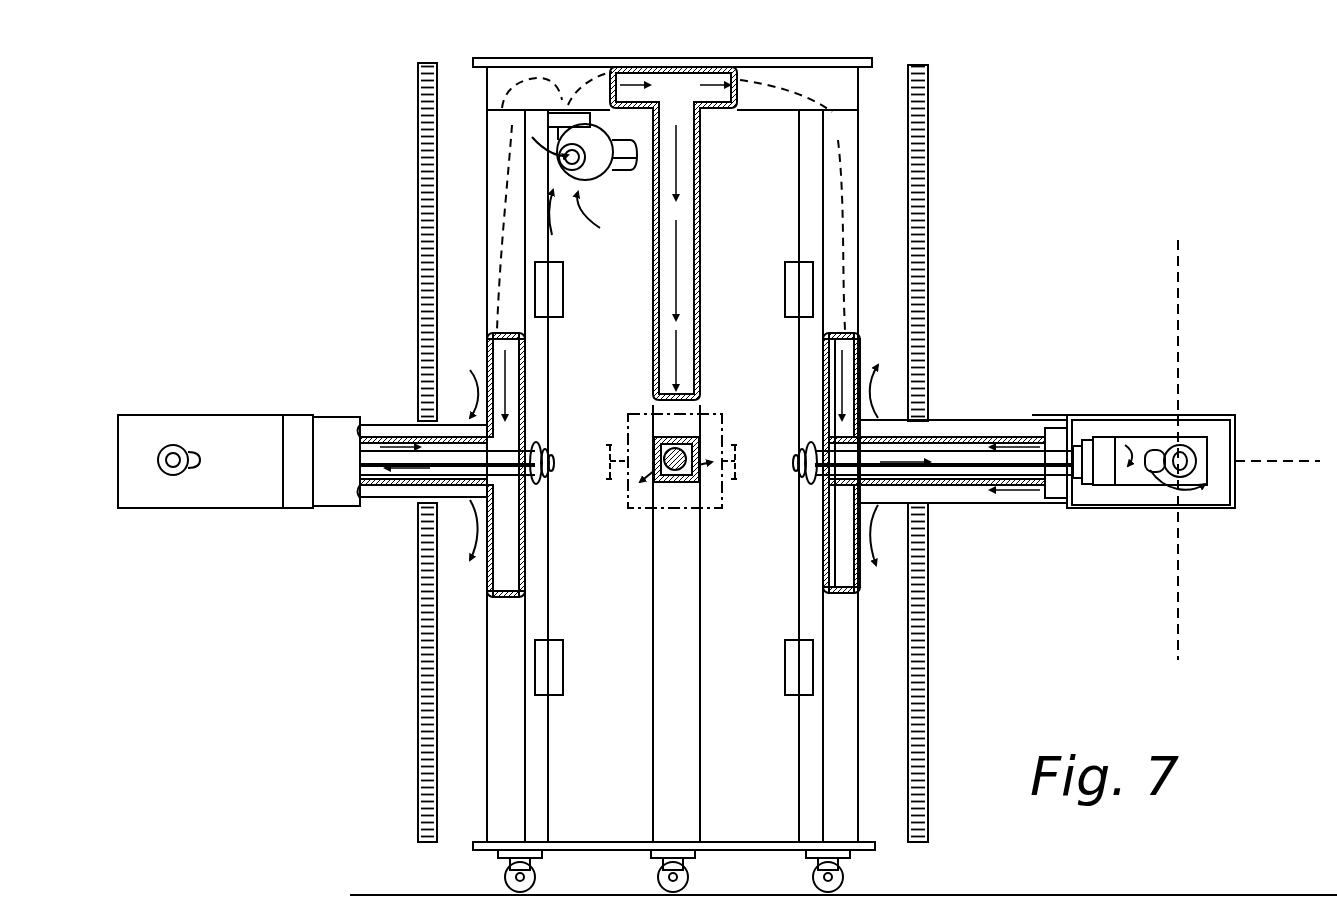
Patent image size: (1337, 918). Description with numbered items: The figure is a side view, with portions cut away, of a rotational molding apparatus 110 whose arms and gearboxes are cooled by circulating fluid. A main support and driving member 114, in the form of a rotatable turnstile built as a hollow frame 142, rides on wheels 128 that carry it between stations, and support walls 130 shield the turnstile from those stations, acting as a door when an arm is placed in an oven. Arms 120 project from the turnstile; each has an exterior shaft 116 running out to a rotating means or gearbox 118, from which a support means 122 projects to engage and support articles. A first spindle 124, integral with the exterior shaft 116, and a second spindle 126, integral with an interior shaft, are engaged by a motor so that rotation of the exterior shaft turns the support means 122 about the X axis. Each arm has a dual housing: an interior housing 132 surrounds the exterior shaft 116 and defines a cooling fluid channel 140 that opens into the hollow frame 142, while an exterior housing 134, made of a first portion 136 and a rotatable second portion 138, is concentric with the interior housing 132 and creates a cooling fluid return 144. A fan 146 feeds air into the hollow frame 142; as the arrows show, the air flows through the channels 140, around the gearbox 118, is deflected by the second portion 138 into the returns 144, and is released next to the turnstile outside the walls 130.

The rotational molding apparatus 110 is at (281, 126).
The main support and driving member 114 is at (776, 58).
The exterior shaft 116 is at (985, 437).
The rotating means 118 is at (1218, 418).
The arms 120 is at (90, 433).
The support means 122 is at (1185, 488).
The first spindle 124 is at (796, 480).
The second spindle 126 is at (790, 445).
The wheels 128 is at (508, 875).
The support walls 130 is at (418, 283).
The interior housing 132 is at (402, 487).
The exterior housing 134 is at (300, 508).
The first portion 136 is at (316, 418).
The second portion 138 is at (205, 420).
The cooling fluid channel 140 is at (418, 400).
The hollow frame 142 is at (850, 88).
The cooling fluid return 144 is at (358, 422).
The fan 146 is at (606, 185).